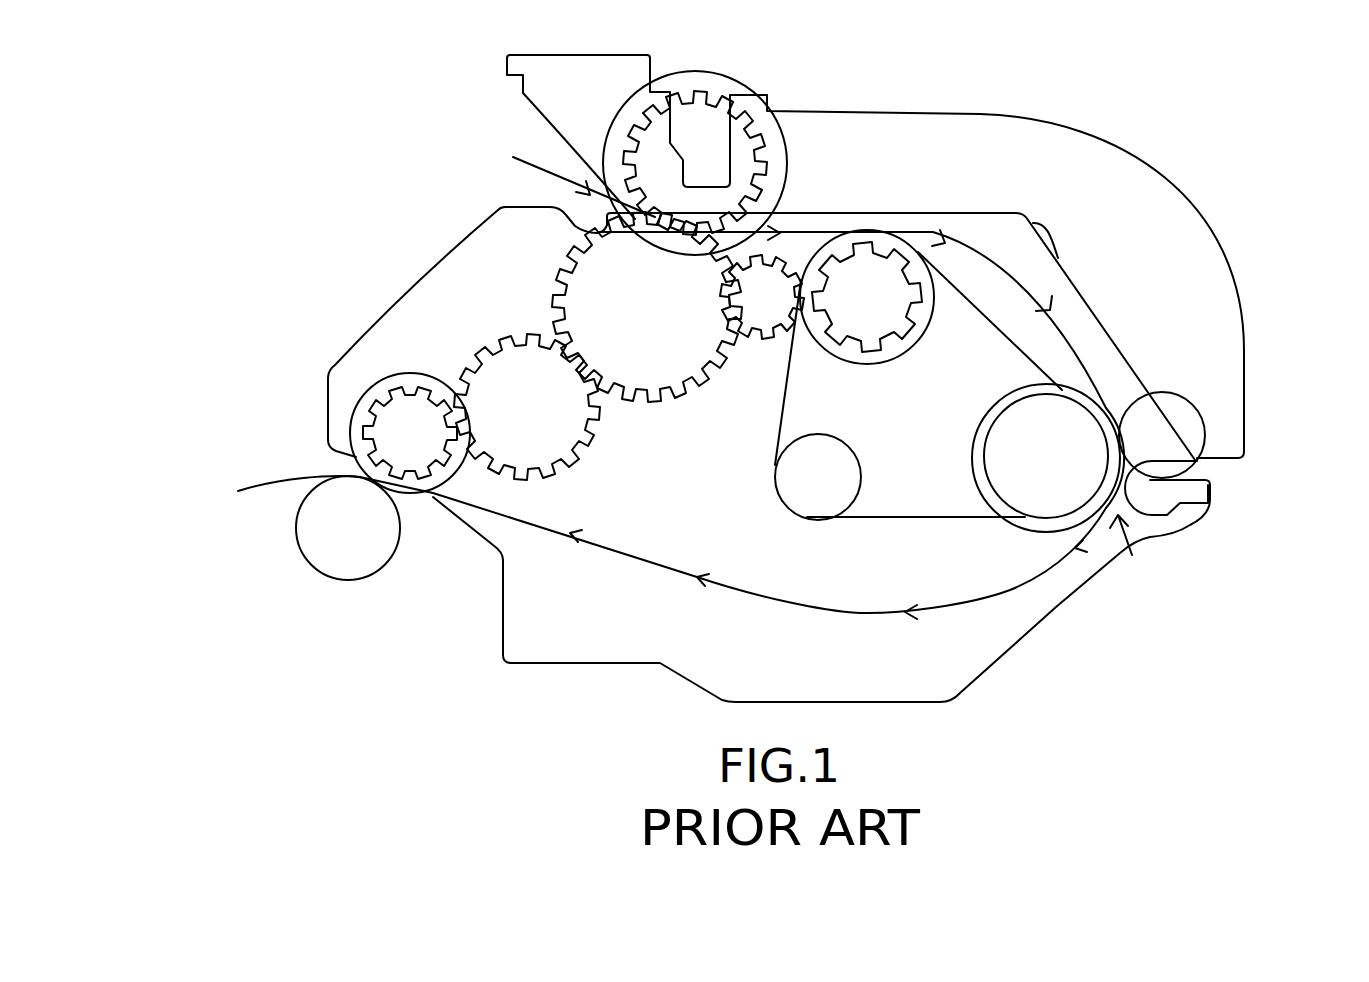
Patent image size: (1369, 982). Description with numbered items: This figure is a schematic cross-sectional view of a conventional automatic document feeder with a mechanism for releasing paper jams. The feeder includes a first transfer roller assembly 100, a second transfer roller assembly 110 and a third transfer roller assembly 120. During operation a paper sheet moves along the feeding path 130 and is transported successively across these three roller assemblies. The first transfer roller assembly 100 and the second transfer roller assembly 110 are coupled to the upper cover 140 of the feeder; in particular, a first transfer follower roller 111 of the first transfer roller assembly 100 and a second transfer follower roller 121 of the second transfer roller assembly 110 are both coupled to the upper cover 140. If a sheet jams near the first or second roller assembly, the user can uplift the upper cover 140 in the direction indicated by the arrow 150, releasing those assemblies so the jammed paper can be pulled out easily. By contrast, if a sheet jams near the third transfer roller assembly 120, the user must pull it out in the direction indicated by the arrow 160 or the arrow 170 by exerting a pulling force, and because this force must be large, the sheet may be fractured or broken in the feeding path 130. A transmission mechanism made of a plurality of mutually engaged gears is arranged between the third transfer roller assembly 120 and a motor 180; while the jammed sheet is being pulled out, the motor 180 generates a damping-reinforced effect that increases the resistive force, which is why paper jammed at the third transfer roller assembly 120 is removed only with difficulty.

The first transfer roller assembly 100 is at (725, 68).
The second transfer roller assembly 110 is at (1125, 525).
The first transfer follower roller 111 is at (783, 142).
The third transfer roller assembly 120 is at (430, 558).
The second transfer follower roller 121 is at (1185, 432).
The feeding path 130 is at (790, 605).
The upper cover 140 is at (1100, 172).
The arrow 150 is at (1025, 62).
The arrow 160 is at (345, 468).
The arrow 170 is at (405, 508).
The motor 180 is at (790, 487).